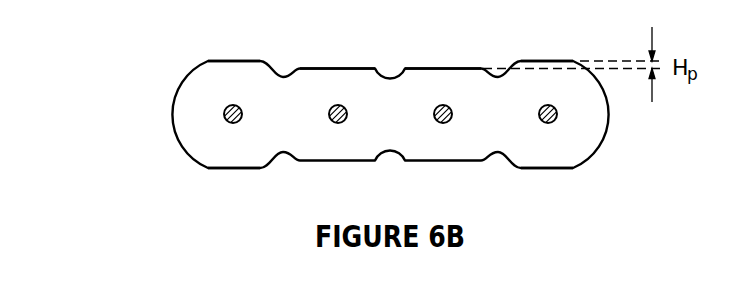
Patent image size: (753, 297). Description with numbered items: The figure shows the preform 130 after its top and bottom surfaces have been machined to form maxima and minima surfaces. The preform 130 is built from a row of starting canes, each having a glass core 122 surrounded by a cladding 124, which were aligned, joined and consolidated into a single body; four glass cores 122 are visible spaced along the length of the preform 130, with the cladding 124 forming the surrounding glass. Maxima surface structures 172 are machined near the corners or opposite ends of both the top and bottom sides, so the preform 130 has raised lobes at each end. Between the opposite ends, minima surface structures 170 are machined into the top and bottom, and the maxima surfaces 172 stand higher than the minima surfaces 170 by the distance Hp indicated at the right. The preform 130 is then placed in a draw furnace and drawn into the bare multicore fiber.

The preform 130 is at (147, 53).
The maxima surface structures 172 is at (230, 60).
The minima surface structures 170 is at (440, 68).
The glass core 122 is at (225, 108).
The cladding 124 is at (213, 130).